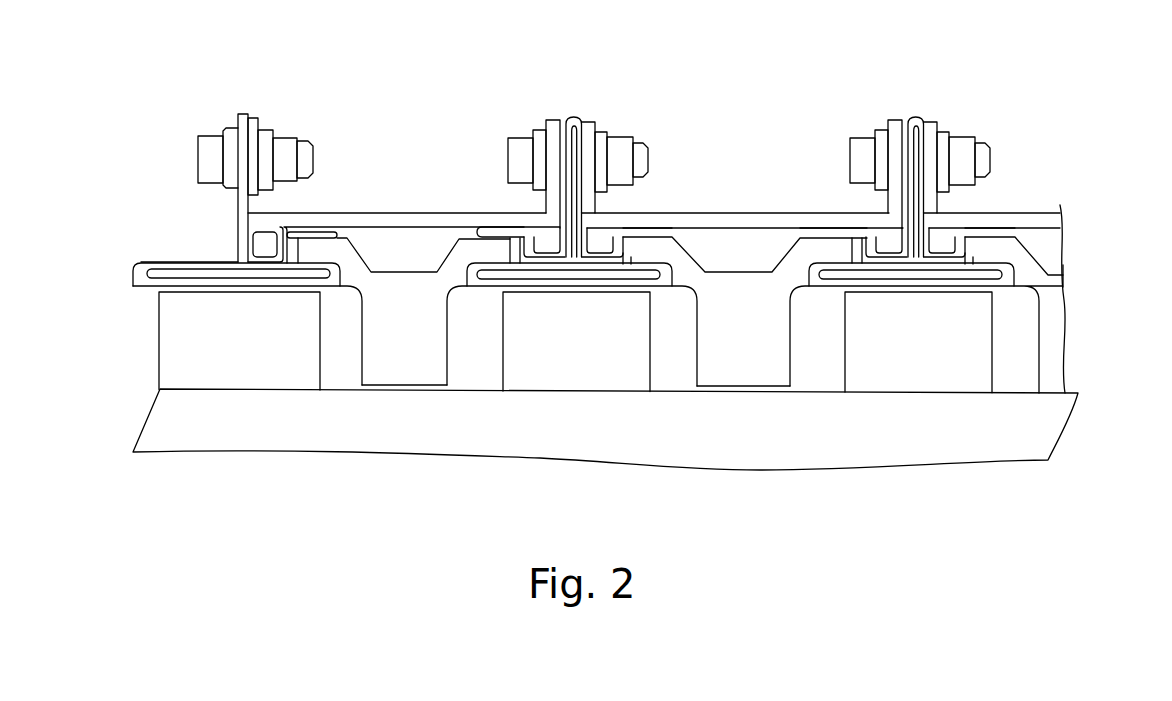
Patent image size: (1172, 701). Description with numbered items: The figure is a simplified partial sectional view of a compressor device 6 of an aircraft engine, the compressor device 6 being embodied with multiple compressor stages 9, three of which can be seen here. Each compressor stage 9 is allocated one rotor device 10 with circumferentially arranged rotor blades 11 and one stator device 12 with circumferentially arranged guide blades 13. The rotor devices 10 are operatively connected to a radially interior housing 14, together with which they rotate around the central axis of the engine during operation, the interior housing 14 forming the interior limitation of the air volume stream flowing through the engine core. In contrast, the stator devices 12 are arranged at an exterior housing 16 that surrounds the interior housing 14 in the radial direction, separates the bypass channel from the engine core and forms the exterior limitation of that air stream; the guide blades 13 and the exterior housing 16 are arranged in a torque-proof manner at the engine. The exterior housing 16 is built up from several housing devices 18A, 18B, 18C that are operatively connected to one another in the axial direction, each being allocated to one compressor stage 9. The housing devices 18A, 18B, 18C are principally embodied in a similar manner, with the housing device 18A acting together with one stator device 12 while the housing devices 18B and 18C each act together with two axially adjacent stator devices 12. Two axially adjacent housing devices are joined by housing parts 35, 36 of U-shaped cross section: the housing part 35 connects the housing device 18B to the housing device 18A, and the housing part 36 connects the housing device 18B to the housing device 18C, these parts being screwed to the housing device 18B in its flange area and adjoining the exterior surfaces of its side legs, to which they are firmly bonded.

The compressor device 6 is at (240, 95).
The compressor stage 9 is at (328, 200).
The rotor device 10 is at (150, 328).
The rotor blades 11 is at (177, 352).
The stator device 12 is at (353, 368).
The guide blades 13 is at (403, 362).
The interior housing 14 is at (177, 407).
The exterior housing 16 is at (472, 115).
The housing device 18A is at (222, 228).
The housing device 18B is at (577, 98).
The housing device 18C is at (920, 98).
The housing part 35 is at (383, 224).
The housing part 36 is at (745, 224).